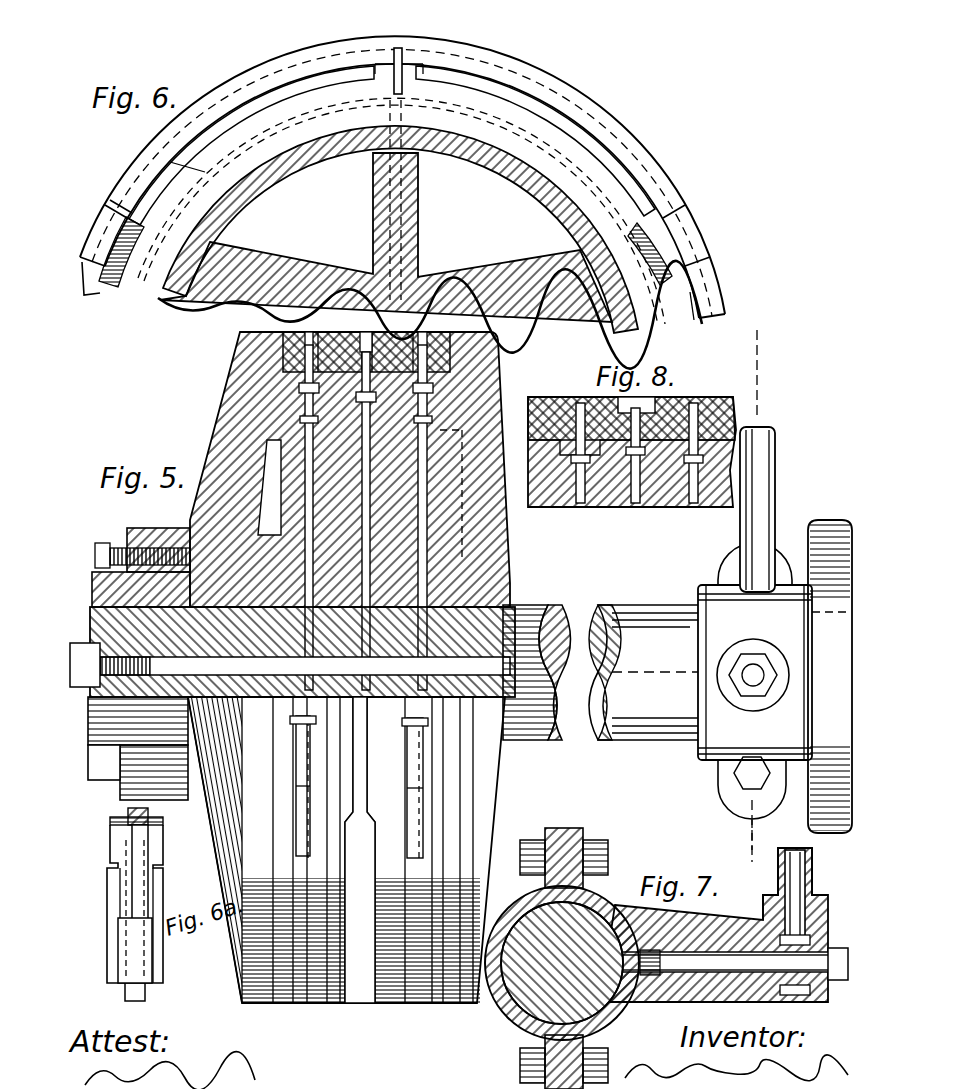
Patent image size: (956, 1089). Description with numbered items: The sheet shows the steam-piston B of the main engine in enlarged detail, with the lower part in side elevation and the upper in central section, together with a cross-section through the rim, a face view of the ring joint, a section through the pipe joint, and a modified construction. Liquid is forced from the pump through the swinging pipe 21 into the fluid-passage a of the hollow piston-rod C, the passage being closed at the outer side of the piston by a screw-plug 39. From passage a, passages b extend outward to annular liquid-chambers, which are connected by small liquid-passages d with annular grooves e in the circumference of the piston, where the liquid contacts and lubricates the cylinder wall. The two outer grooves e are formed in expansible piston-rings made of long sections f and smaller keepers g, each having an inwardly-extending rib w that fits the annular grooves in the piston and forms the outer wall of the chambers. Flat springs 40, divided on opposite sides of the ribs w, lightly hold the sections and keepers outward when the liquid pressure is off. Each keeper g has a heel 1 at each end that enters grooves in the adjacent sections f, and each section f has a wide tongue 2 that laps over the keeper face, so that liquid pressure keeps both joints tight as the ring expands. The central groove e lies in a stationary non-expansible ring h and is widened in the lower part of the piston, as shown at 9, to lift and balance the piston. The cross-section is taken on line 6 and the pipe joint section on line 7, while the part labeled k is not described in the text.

In FIG. 6, the heel 1 is at (208, 170).
In FIG. 5, the heel 1 is at (296, 720).
In FIG. 6a, the heel 1 is at (138, 856).
In FIG. 6, the tongue 2 is at (120, 207).
In FIG. 5, the tongue 2 is at (296, 766).
In FIG. 6a, the tongue 2 is at (124, 884).
In FIG. 5, the section line 6 is at (292, 504).
In FIG. 5, the section line 7 is at (754, 599).
In FIG. 7, the section line 7 is at (744, 838).
In FIG. 5, the cut-away portion of ring 9 is at (346, 850).
In FIG. 5, the swinging pipe 21 is at (770, 518).
In FIG. 7, the swinging pipe 21 is at (806, 858).
In FIG. 5, the screw-plug 39 is at (138, 748).
In FIG. 6, the flat springs 40 is at (275, 92).
In FIG. 5, the flat springs 40 is at (300, 378).
In FIG. 5, the fluid-passage a is at (470, 680).
In FIG. 7, the fluid-passage a is at (540, 926).
In FIG. 6, the passages b is at (405, 212).
In FIG. 5, the passages b is at (300, 502).
In FIG. 8, the passages b is at (578, 507).
In FIG. 6, the steam-piston B is at (430, 247).
In FIG. 5, the steam-piston B is at (304, 469).
In FIG. 8, the steam-piston B is at (545, 462).
In FIG. 6, the hollow piston-rod C is at (140, 286).
In FIG. 5, the hollow piston-rod C is at (300, 396).
In FIG. 8, the hollow piston-rod C is at (560, 480).
In FIG. 7, the hollow piston-rod C is at (520, 995).
In FIG. 6, the liquid-passages d is at (408, 60).
In FIG. 5, the liquid-passages d is at (290, 356).
In FIG. 8, the liquid-passages d is at (545, 424).
In FIG. 6, the annular grooves e is at (382, 52).
In FIG. 5, the annular grooves e is at (285, 332).
In FIG. 8, the annular grooves e is at (580, 403).
In FIG. 6a, the annular grooves e is at (130, 840).
In FIG. 6, the piston-ring sections f is at (292, 58).
In FIG. 5, the piston-ring sections f is at (370, 600).
In FIG. 8, the piston-ring sections f is at (722, 392).
In FIG. 6, the keepers g is at (684, 192).
In FIG. 5, the keepers g is at (296, 792).
In FIG. 8, the stationary non-expansible ring h is at (656, 404).
In FIG. 5, the pin k is at (325, 360).
In FIG. 5, the inwardly-extending rib w is at (300, 390).